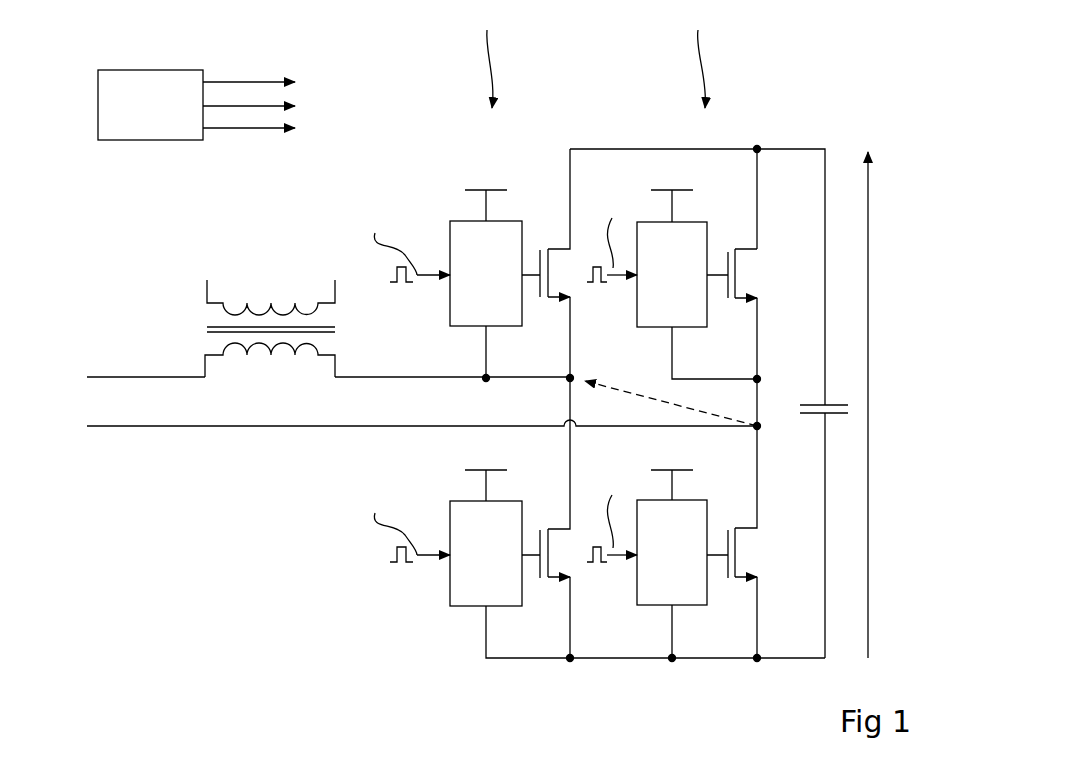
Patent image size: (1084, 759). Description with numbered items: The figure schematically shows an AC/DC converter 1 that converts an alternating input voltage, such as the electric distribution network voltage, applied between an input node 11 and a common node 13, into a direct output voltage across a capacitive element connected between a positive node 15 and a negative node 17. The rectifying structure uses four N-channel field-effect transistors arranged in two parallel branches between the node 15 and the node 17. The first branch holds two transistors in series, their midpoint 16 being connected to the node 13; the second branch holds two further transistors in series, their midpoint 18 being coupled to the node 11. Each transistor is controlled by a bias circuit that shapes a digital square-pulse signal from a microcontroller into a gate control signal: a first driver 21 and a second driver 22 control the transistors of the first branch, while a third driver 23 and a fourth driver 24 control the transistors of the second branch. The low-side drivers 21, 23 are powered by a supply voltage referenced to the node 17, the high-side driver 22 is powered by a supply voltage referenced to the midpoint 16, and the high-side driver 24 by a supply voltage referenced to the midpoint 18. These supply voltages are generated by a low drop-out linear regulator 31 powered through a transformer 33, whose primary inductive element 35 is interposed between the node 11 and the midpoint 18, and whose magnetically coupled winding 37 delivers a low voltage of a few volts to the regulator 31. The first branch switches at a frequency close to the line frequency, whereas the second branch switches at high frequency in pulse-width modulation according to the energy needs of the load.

The converter 1 is at (248, 596).
The node or terminal 11 is at (150, 377).
The node or terminal 13 is at (147, 428).
The node or terminal 15 is at (727, 149).
The midpoint 16 is at (759, 425).
The node or terminal 17 is at (706, 660).
The midpoint 18 is at (572, 378).
The driver 21 is at (697, 506).
The driver 22 is at (697, 226).
The driver 23 is at (522, 512).
The driver 24 is at (522, 232).
The regulator 31 is at (178, 70).
The transformer 33 is at (240, 319).
The primary inductive element 35 is at (270, 357).
The inductive element 37 is at (272, 305).